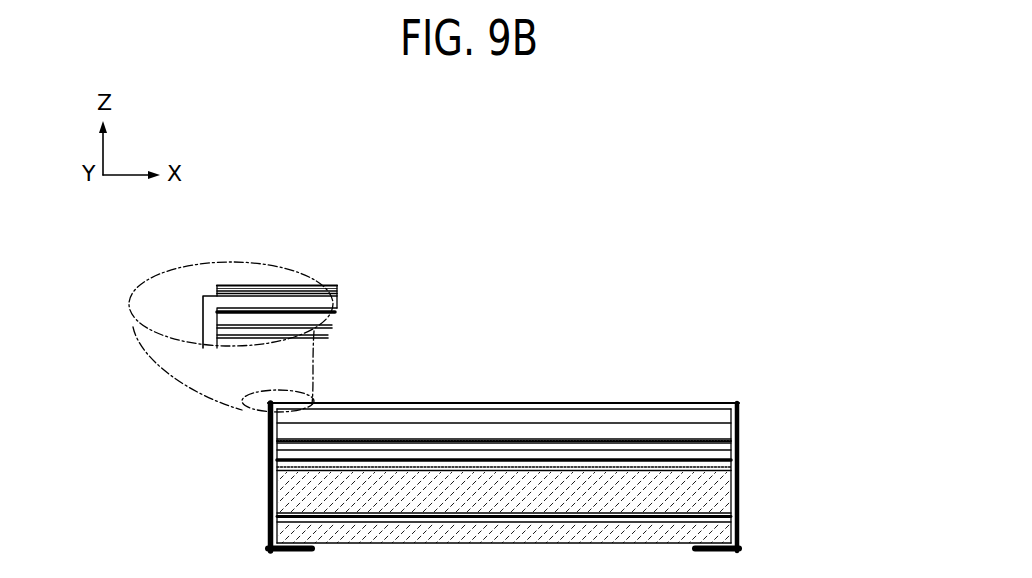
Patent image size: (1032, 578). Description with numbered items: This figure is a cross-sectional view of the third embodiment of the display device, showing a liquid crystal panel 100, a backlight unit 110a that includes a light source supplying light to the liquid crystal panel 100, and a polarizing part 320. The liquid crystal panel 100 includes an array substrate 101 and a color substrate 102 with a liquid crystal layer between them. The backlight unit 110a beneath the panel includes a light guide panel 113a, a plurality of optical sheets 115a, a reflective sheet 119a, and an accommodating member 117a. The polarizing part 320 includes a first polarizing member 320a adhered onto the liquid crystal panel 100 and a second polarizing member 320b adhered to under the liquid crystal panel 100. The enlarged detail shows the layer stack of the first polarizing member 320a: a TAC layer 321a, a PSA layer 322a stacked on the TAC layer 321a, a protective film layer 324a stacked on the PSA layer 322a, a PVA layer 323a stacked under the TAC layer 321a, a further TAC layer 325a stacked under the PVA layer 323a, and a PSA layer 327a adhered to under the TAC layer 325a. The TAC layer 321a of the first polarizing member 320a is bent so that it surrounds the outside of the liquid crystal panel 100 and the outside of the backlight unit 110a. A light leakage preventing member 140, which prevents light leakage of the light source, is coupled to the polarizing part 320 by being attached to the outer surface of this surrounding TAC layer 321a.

The liquid crystal panel 100 is at (504, 362).
The array substrate 101 is at (543, 335).
The color substrate 102 is at (533, 418).
The polarizing part 320 is at (504, 381).
The first polarizing member 320a is at (603, 405).
The second polarizing member 320b is at (672, 438).
The backlight unit 110a is at (572, 491).
The optical sheets 115a is at (727, 460).
The light guide panel 113a is at (712, 488).
The reflective sheet 119a is at (720, 515).
The accommodating member 117a is at (708, 533).
The light leakage preventing member 140 is at (267, 522).
The TAC layer 321a is at (209, 325).
The PSA layer 322a is at (232, 292).
The PVA layer 323a is at (327, 312).
The protective film layer 324a is at (278, 290).
The TAC layer 325a is at (317, 320).
The PSA layer 327a is at (258, 334).